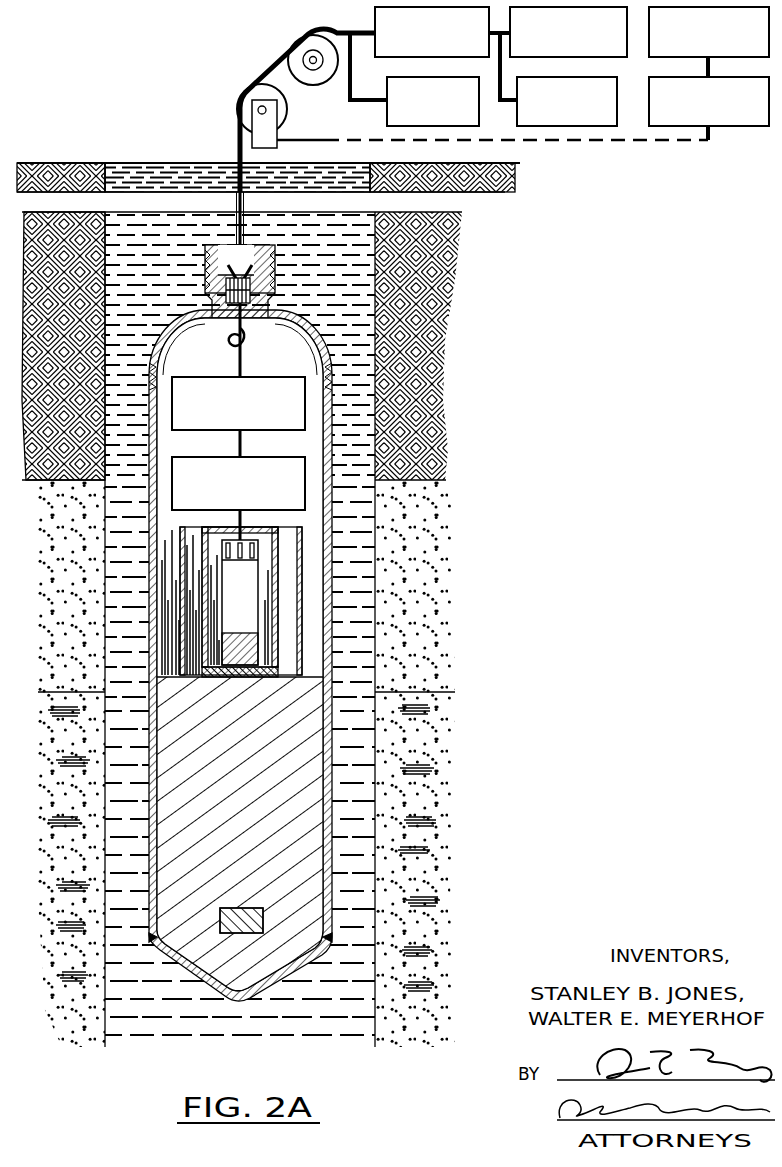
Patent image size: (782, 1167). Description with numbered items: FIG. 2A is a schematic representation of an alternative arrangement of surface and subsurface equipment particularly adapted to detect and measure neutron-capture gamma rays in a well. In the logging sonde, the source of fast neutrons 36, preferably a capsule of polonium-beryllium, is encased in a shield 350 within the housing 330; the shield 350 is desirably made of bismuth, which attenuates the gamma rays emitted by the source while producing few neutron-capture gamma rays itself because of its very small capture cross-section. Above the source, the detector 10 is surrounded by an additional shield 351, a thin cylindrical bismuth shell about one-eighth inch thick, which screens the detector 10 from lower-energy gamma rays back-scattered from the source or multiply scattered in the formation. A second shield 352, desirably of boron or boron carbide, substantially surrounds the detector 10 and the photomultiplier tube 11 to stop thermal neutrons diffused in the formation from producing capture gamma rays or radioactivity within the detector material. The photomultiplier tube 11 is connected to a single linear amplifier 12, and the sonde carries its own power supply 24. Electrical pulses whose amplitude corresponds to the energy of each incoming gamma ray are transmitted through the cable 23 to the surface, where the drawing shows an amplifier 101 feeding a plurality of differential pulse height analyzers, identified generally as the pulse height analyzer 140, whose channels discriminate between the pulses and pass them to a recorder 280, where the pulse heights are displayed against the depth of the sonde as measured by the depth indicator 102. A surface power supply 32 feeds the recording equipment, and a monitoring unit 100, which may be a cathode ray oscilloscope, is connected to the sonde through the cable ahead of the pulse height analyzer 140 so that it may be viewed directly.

The detector 10 is at (230, 657).
The photomultiplier tube 11 is at (220, 600).
The linear amplifier 12 is at (175, 480).
The cable 23 is at (268, 70).
The power supply 24 is at (172, 410).
The surface power supply 32 is at (387, 108).
The source of fast neutrons 36 is at (250, 933).
The monitoring unit 100 is at (555, 126).
The amplifier 101 is at (375, 22).
The depth indicator 102 is at (755, 126).
The pulse height analyzer 140 is at (580, 57).
The recorder 280 is at (688, 58).
The housing 330 is at (332, 712).
The shield 350 is at (300, 815).
The additional shield 351 is at (298, 600).
The second shield 352 is at (280, 553).